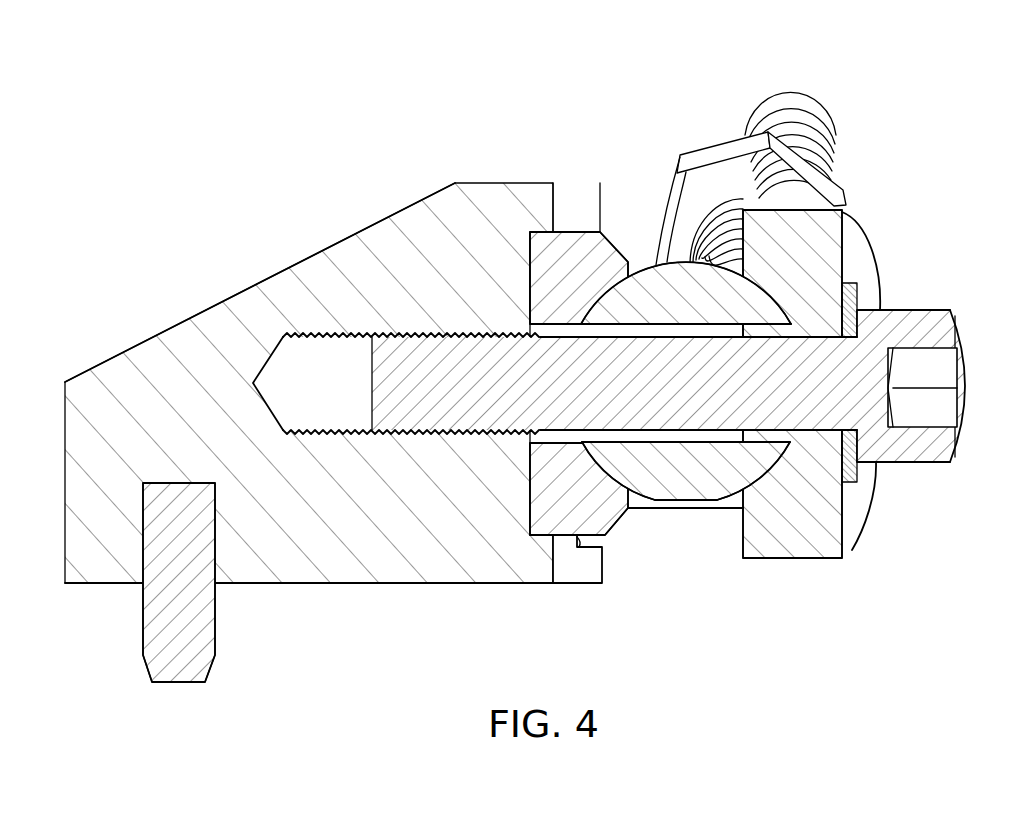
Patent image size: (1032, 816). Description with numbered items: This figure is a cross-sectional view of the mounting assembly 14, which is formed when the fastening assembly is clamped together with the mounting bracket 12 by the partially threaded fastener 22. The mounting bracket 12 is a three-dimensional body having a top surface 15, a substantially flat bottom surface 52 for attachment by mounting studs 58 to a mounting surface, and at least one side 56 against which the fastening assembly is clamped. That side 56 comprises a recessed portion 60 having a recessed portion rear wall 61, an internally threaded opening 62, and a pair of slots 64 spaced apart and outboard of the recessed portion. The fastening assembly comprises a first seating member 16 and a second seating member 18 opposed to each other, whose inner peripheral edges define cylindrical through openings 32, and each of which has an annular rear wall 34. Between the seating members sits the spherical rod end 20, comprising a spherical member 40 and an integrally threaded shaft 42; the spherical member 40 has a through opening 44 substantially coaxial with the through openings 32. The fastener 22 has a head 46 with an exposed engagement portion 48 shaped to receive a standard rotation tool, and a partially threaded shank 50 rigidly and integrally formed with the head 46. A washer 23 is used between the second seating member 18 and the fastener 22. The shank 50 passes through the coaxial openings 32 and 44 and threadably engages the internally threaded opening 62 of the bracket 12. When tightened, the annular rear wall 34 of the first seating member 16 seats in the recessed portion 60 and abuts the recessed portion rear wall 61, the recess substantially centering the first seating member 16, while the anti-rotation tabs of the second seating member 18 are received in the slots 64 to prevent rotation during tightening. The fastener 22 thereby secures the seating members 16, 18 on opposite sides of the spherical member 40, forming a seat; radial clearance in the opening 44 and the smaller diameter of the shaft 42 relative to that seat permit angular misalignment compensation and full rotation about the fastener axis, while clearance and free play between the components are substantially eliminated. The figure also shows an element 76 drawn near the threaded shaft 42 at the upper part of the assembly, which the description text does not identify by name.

The mounting bracket 12 is at (90, 584).
The mounting assembly 14 is at (840, 646).
The top surface 15 is at (198, 312).
The first seating member 16 is at (600, 232).
The second seating member 18 is at (834, 255).
The spherical rod end 20 is at (714, 496).
The partially threaded fastener 22 is at (938, 304).
The washer 23 is at (862, 300).
The cylindrical through openings 32 is at (551, 444).
The annular rear wall 34 is at (528, 300).
The spherical member 40 is at (686, 381).
The integrally threaded shaft 42 is at (782, 83).
The through opening 44 is at (657, 442).
The head 46 is at (930, 464).
The engagement portion 48 is at (956, 368).
The partially threaded shank 50 is at (614, 362).
The bottom surface 52 is at (338, 584).
The side 56 is at (562, 584).
The mounting studs 58 is at (179, 683).
The recessed portion 60 is at (540, 234).
The recessed portion rear wall 61 is at (528, 480).
The internally threaded opening 62 is at (308, 333).
The slots 64 is at (580, 548).
The clip 76 is at (702, 146).